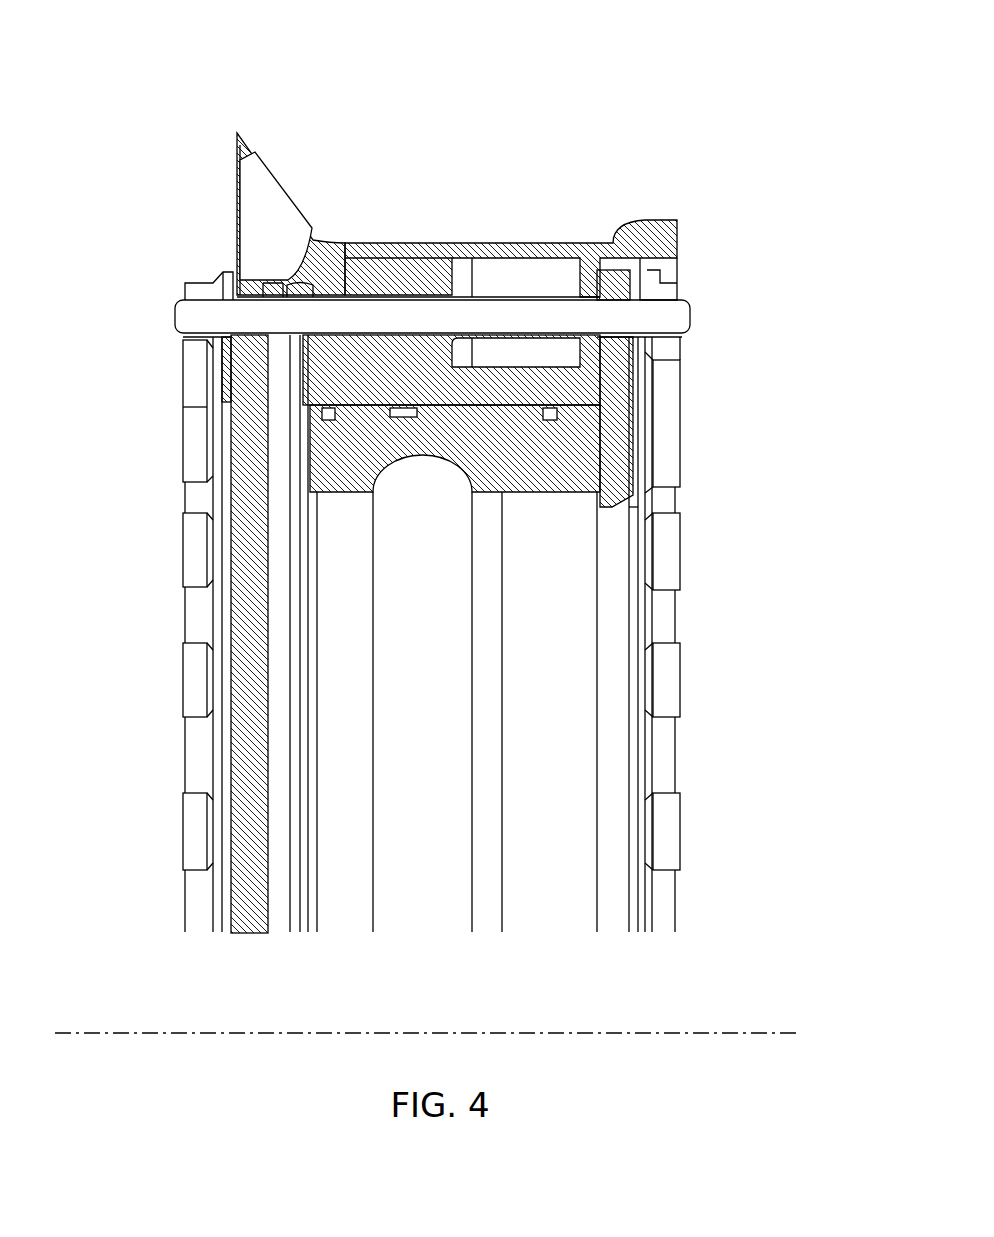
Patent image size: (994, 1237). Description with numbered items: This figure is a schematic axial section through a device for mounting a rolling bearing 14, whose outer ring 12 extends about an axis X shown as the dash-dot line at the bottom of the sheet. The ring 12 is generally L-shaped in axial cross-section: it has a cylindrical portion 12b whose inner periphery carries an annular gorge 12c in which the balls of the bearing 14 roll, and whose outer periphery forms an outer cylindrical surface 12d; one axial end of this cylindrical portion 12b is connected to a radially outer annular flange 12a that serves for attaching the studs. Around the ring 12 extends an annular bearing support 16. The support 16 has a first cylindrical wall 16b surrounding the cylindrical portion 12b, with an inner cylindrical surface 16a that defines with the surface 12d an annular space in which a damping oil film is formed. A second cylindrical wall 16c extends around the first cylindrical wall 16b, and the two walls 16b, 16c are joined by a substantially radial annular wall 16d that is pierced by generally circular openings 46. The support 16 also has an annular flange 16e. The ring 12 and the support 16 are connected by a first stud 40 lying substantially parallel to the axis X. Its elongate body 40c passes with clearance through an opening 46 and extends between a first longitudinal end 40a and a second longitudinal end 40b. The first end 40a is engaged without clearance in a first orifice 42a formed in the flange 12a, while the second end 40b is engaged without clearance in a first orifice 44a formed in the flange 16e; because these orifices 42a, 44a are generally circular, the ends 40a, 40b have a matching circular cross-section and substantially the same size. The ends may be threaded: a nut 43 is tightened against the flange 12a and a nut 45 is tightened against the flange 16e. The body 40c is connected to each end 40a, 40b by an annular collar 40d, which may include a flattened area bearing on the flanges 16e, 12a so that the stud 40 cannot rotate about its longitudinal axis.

The outer ring 12 is at (548, 915).
The rolling bearing 14 is at (548, 915).
The radially outer annular flange 12a is at (620, 360).
The cylindrical portion 12b is at (337, 463).
The annular gorge 12c is at (428, 500).
The outer cylindrical surface 12d is at (477, 387).
The annular bearing support 16 is at (297, 168).
The inner cylindrical surface 16a is at (437, 300).
The first cylindrical wall 16b is at (537, 387).
The second cylindrical wall 16c is at (390, 263).
The radial annular wall 16d is at (347, 352).
The annular flange 16e is at (252, 900).
The first stud 40 is at (524, 268).
The first longitudinal end 40a is at (678, 295).
The second longitudinal end 40b is at (195, 312).
The elongate body 40c is at (493, 300).
The annular collar 40d is at (267, 353).
The first orifice 42a is at (618, 300).
The nut 43 is at (670, 348).
The first orifice 44a is at (246, 292).
The nut 45 is at (185, 345).
The opening 46 is at (370, 296).
The axis X is at (113, 1030).